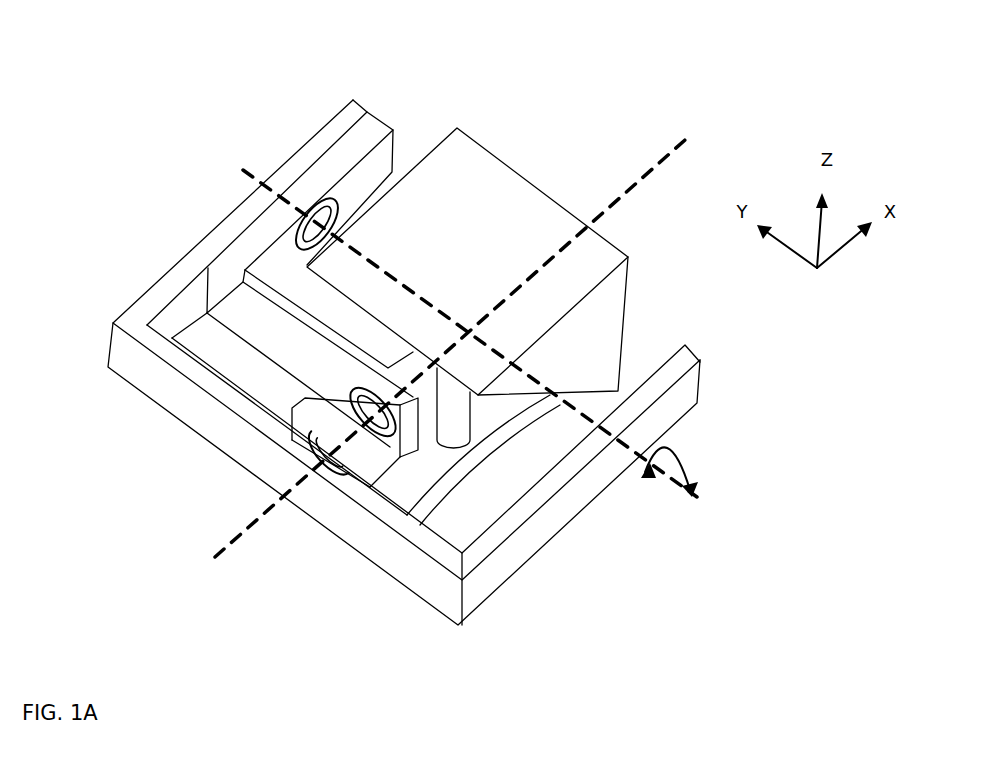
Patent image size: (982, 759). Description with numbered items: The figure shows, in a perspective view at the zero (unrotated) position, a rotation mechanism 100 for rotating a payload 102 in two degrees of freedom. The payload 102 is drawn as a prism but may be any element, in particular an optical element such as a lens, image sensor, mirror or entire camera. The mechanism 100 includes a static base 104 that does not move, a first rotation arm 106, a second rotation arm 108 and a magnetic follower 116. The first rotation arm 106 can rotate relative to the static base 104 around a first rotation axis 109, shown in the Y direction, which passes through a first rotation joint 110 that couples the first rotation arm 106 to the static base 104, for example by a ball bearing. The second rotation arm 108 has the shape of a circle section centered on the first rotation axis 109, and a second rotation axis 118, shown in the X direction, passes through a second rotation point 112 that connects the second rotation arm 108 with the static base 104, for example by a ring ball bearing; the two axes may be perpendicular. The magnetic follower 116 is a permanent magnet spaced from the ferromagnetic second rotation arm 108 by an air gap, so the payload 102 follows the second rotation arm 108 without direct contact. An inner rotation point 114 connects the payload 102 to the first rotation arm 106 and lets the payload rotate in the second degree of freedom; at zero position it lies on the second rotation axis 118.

The rotation mechanism 100 is at (602, 43).
The payload 102 is at (593, 325).
The static base 104 is at (153, 302).
The first rotation arm 106 is at (263, 332).
The second rotation arm 108 is at (447, 472).
The first rotation axis 109 is at (243, 170).
The first rotation joint 110 is at (316, 222).
The second rotation point 112 is at (323, 457).
The inner rotation point 114 is at (357, 413).
The magnetic follower 116 is at (463, 425).
The second rotation axis 118 is at (240, 533).